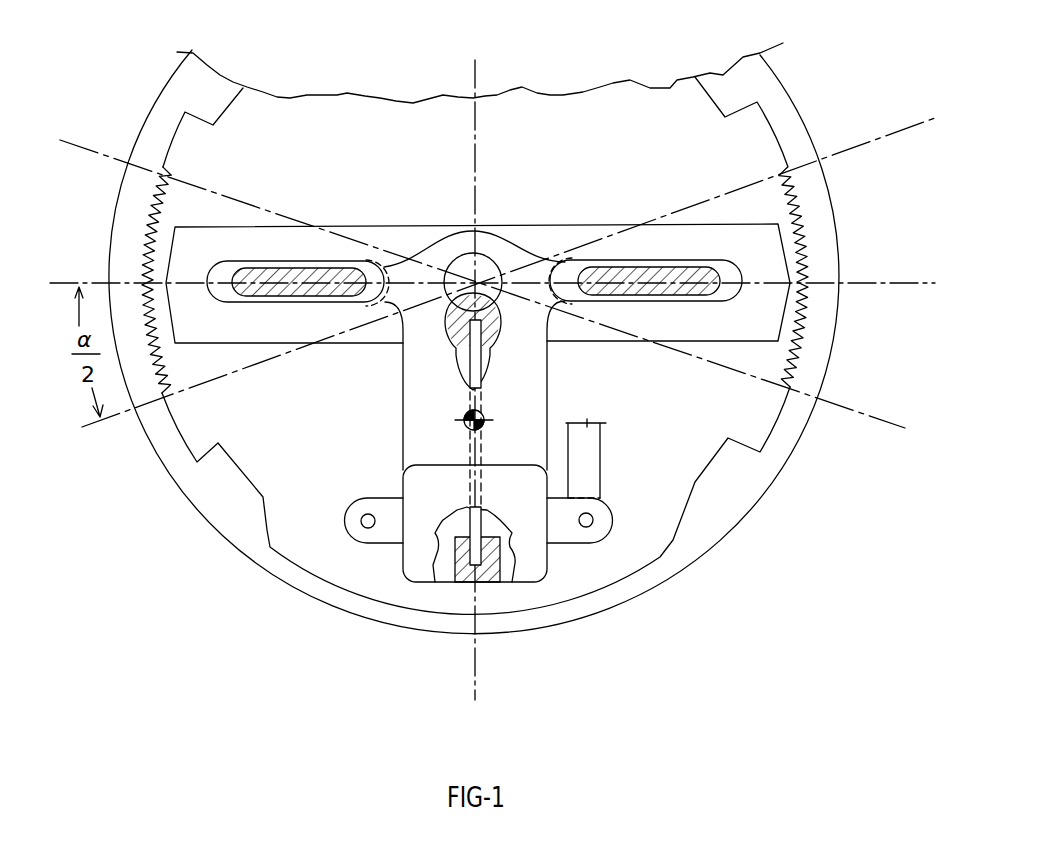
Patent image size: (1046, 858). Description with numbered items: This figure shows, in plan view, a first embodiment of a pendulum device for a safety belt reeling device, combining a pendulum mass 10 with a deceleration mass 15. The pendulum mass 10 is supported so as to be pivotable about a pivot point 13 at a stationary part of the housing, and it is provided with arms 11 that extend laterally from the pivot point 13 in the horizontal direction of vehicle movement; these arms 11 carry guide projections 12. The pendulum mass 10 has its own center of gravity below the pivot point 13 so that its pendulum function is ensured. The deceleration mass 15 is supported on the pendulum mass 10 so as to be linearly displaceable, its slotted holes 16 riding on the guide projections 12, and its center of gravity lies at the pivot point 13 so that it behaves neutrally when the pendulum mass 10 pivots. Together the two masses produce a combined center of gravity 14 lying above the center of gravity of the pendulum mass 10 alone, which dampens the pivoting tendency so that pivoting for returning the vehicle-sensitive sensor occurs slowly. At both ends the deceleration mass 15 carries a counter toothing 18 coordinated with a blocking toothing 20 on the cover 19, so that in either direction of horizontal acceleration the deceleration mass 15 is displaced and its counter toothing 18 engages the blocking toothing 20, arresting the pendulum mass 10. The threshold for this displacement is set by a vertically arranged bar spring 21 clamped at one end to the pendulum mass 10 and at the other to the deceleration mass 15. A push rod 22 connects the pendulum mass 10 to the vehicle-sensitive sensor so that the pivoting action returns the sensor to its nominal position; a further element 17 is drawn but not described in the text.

The pendulum mass 10 is at (403, 542).
The arms 11 is at (223, 275).
The guide projections 12 is at (703, 295).
The pivot point 13 is at (470, 278).
The combined center of gravity 14 is at (457, 422).
The deceleration mass 15 is at (300, 248).
The slotted holes 16 is at (630, 297).
The boss 17 is at (476, 280).
The counter toothing 18 is at (163, 177).
The cover 19 is at (127, 207).
The blocking toothing 20 is at (147, 240).
The bar spring 21 is at (473, 367).
The push rod 22 is at (588, 475).